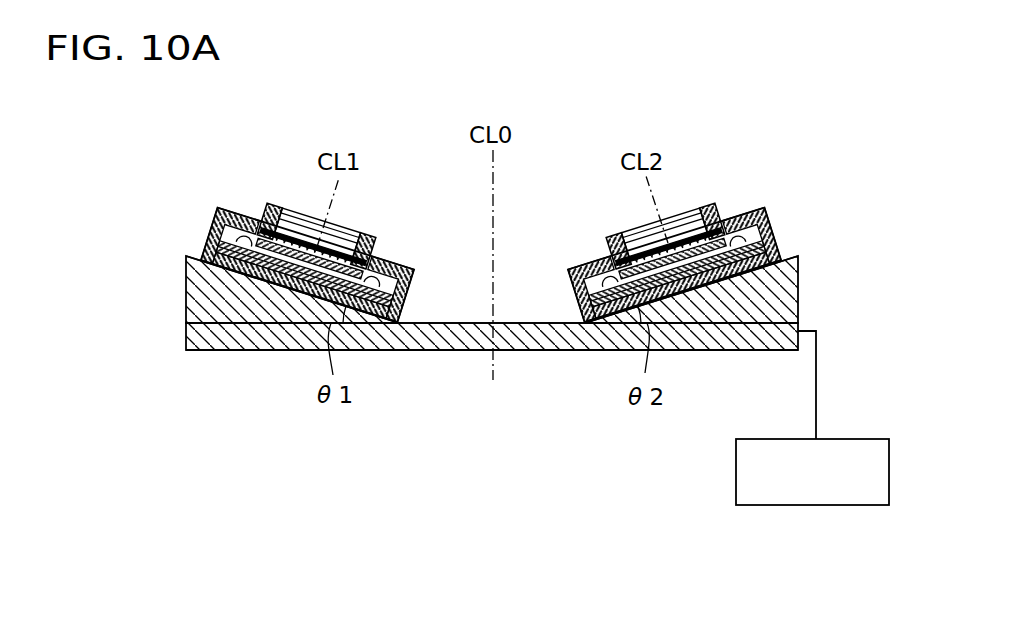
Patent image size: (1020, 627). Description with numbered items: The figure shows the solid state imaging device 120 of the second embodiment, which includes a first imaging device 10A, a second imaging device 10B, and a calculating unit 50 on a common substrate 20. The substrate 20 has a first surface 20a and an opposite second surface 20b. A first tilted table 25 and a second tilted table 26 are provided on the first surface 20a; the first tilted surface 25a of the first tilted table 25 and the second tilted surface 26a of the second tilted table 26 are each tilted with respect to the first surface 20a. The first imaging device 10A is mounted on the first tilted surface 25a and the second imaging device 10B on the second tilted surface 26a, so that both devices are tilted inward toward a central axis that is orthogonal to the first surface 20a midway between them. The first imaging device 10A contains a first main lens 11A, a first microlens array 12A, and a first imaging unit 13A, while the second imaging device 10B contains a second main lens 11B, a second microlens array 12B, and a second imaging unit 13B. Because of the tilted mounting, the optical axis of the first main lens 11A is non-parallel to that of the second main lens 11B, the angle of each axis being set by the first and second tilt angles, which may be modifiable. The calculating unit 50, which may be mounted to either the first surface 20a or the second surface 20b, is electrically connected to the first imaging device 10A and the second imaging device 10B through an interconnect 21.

The first imaging device 10A is at (214, 162).
The second imaging device 10B is at (762, 148).
The first main lens 11A is at (333, 227).
The second main lens 11B is at (653, 222).
The first microlens array 12A is at (317, 260).
The second microlens array 12B is at (660, 258).
The first imaging unit 13A is at (302, 270).
The second imaging unit 13B is at (677, 272).
The substrate 20 is at (407, 343).
The first surface 20a is at (443, 322).
The second surface 20b is at (458, 352).
The interconnect 21 is at (817, 372).
The first tilted table 25 is at (203, 292).
The first tilted surface 25a is at (197, 258).
The second tilted table 26 is at (770, 293).
The second tilted surface 26a is at (785, 258).
The calculating unit 50 is at (812, 505).
The solid state imaging device 120 is at (673, 98).